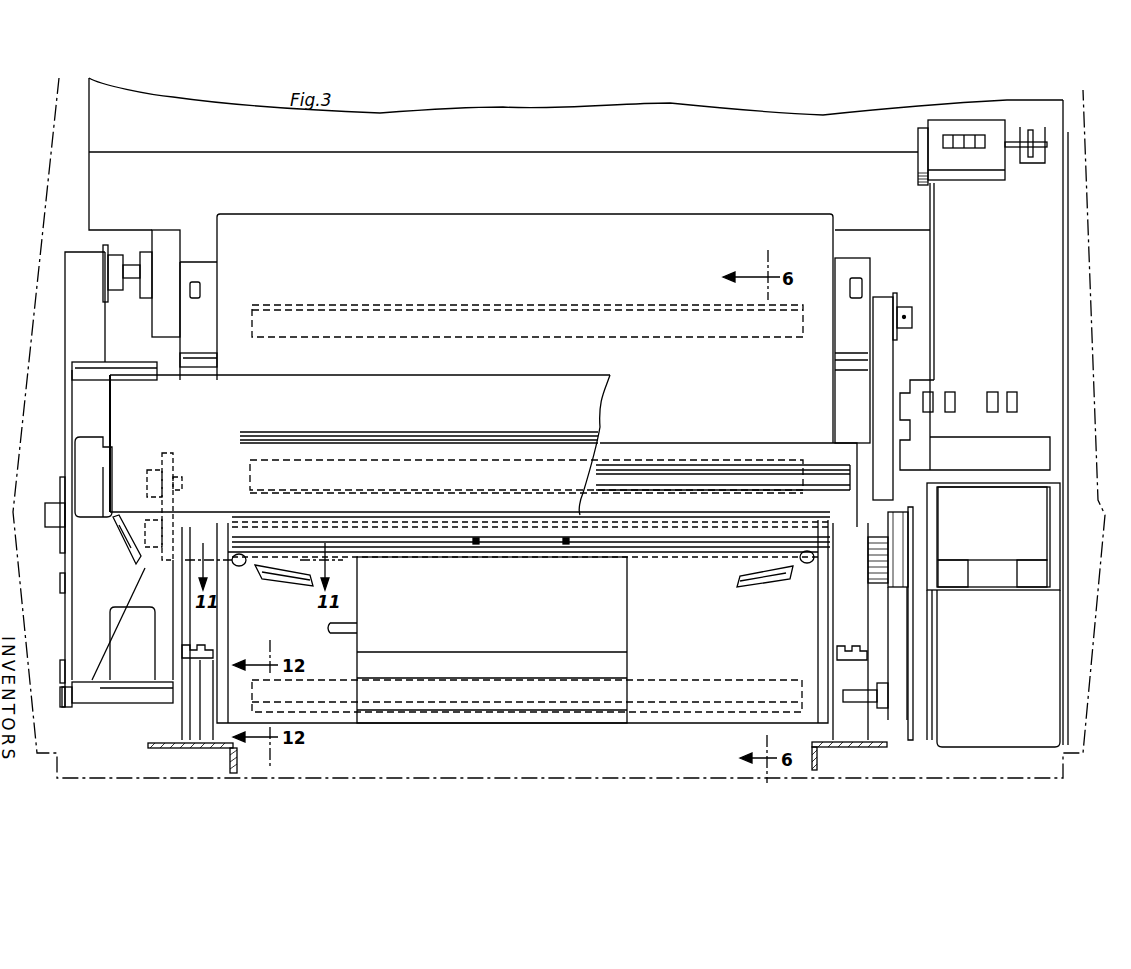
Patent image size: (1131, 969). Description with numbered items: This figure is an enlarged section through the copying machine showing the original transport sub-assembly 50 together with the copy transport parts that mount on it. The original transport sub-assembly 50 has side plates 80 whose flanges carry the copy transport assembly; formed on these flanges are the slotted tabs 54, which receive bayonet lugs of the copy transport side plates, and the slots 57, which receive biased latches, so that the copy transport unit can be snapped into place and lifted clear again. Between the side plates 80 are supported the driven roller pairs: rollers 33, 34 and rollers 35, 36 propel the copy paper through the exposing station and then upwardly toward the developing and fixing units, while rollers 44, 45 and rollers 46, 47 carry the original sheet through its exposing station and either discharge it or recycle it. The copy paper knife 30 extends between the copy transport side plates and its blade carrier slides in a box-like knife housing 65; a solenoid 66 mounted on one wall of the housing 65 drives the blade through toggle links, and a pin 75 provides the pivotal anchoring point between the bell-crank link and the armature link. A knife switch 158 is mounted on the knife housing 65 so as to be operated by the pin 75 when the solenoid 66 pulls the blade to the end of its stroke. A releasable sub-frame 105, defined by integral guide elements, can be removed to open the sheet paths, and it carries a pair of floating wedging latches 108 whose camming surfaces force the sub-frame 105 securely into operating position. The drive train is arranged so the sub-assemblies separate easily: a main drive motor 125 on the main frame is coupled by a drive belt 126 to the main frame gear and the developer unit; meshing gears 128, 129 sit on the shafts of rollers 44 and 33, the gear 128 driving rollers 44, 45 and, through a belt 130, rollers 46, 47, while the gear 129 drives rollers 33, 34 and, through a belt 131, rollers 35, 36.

The copy paper knife 30 is at (476, 380).
The driven roller 33 is at (766, 487).
The driven roller 34 is at (748, 460).
The driven roller 35 is at (604, 307).
The driven roller 36 is at (648, 337).
The driven roller 44 is at (621, 525).
The driven roller 45 is at (614, 556).
The driven roller 46 is at (665, 718).
The driven roller 47 is at (665, 680).
The original transport sub-assembly 50 is at (641, 214).
The slotted tab 54 is at (198, 648).
The slot 57 is at (190, 290).
The knife housing 65 is at (387, 380).
The solenoid 66 is at (137, 682).
The pin 75 is at (126, 525).
The side plate 80 is at (215, 658).
The releasable sub-frame 105 is at (627, 630).
The wedging latch 108 is at (297, 582).
The main drive motor 125 is at (168, 240).
The drive belt 126 is at (65, 345).
The gear 128 is at (158, 566).
The gear 129 is at (168, 457).
The belt 130 is at (902, 655).
The belt 131 is at (873, 392).
The knife switch 158 is at (82, 452).